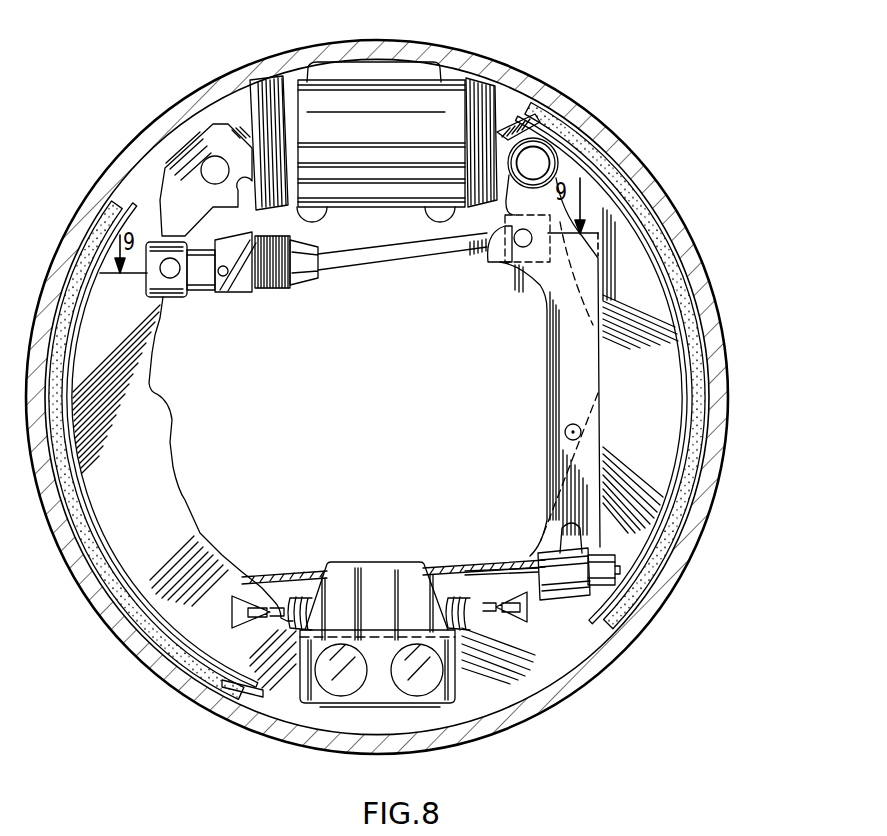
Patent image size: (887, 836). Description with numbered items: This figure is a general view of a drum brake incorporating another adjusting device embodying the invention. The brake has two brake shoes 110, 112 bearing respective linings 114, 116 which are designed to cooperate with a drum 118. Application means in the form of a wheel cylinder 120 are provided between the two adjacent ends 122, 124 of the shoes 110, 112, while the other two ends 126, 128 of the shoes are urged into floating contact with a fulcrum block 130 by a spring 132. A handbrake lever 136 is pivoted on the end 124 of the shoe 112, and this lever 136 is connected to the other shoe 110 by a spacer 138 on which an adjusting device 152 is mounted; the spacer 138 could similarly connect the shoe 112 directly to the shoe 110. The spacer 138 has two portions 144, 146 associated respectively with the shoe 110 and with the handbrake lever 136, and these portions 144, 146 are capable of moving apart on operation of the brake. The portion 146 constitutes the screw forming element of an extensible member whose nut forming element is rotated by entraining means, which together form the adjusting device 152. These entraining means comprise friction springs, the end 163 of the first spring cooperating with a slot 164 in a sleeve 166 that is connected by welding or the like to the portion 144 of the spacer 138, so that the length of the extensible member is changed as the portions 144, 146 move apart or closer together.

The brake shoe 110 is at (137, 477).
The brake shoe 112 is at (633, 425).
The lining 114 is at (95, 553).
The lining 116 is at (688, 484).
The drum 118 is at (181, 102).
The wheel cylinder 120 is at (393, 103).
The end of shoe 122 is at (147, 210).
The end of shoe 124 is at (513, 127).
The end of shoe 126 is at (240, 647).
The end of shoe 128 is at (548, 625).
The fulcrum block 130 is at (360, 650).
The spring 132 is at (453, 610).
The handbrake lever 136 is at (565, 340).
The spacer 138 is at (329, 301).
The spacer portion 144 is at (158, 300).
The spacer portion 146 is at (462, 252).
The adjusting device 152 is at (246, 312).
The end of first spring 163 is at (233, 290).
The slot 164 is at (257, 292).
The sleeve 166 is at (206, 180).